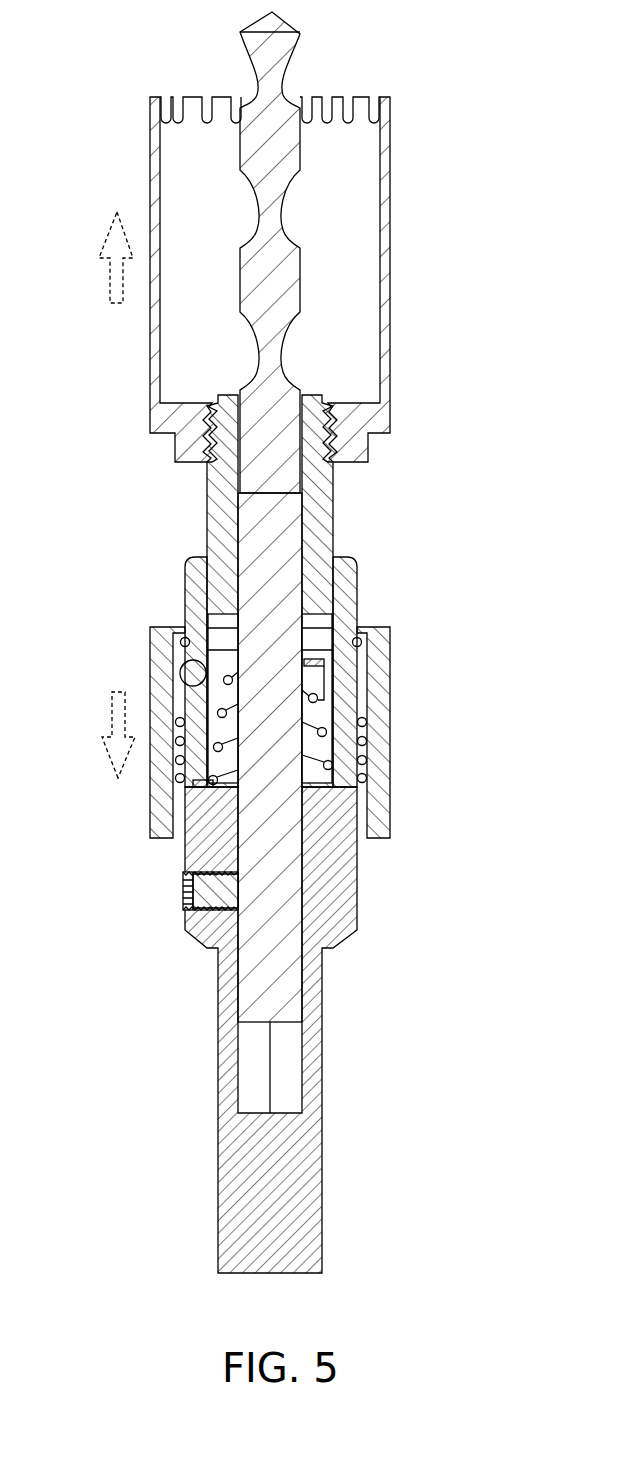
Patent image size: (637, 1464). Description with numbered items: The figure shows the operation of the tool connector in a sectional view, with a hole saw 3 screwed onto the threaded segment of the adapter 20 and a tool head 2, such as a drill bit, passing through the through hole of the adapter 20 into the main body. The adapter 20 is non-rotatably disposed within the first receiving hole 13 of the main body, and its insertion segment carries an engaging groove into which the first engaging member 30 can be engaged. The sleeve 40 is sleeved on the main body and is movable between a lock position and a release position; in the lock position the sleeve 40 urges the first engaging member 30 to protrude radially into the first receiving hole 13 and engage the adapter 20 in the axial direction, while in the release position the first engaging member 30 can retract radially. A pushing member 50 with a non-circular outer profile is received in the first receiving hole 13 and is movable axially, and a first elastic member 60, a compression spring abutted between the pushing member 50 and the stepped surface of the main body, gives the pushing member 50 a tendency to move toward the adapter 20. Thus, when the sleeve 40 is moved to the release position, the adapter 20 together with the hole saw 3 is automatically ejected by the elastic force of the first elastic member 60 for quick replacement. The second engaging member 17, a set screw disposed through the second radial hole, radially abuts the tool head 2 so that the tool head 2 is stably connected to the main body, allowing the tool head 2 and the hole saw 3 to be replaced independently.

The hole saw 3 is at (392, 257).
The adapter 20 is at (316, 521).
The tool head 2 is at (260, 994).
The first receiving hole 13 is at (318, 633).
The pushing member 50 is at (330, 673).
The first elastic member 60 is at (330, 730).
The first engaging member 30 is at (185, 672).
The sleeve 40 is at (150, 800).
The second engaging member 17 is at (205, 897).